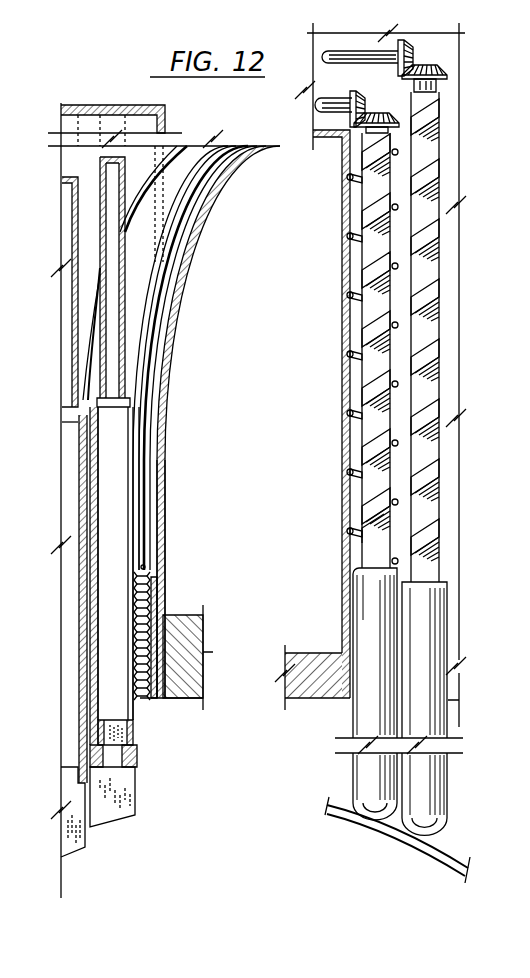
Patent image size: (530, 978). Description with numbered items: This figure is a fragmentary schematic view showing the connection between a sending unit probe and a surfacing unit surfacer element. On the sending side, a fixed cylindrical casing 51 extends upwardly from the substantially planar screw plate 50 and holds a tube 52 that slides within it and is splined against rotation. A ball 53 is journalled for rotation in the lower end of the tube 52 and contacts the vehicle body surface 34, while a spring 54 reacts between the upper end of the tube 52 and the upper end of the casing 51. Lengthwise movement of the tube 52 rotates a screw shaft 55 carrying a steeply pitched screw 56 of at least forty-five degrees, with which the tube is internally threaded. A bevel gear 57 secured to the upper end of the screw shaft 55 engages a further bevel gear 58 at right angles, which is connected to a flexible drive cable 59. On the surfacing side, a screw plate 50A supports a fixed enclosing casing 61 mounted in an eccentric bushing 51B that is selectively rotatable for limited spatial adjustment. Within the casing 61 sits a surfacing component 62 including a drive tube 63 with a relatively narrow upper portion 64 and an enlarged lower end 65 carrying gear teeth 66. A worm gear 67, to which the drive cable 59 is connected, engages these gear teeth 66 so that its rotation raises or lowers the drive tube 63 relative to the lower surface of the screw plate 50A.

The vehicle body surface 34 is at (438, 855).
The screw plate 50 is at (323, 653).
The screw plate 50A is at (203, 610).
The cylindrical casing 51 is at (347, 500).
The eccentric bushing 51B is at (205, 627).
The tube 52 is at (358, 722).
The ball 53 is at (442, 830).
The spring 54 is at (360, 420).
The screw shaft 55 is at (365, 328).
The screw 56 is at (435, 312).
The bevel gear 57 is at (442, 73).
The bevel gear 58 is at (363, 105).
The flexible drive cable 59 is at (192, 202).
The enclosing casing 61 is at (163, 560).
The surfacing component 62 is at (117, 827).
The drive tube 63 is at (137, 757).
The narrow upper portion 64 is at (70, 230).
The enlarged lower end 65 is at (133, 535).
The gear teeth 66 is at (128, 632).
The worm gear 67 is at (155, 613).